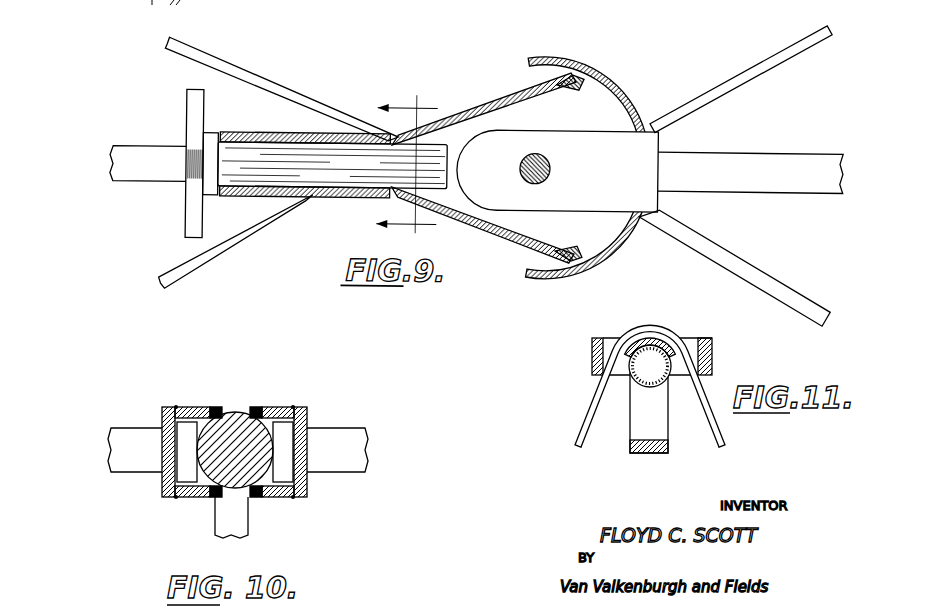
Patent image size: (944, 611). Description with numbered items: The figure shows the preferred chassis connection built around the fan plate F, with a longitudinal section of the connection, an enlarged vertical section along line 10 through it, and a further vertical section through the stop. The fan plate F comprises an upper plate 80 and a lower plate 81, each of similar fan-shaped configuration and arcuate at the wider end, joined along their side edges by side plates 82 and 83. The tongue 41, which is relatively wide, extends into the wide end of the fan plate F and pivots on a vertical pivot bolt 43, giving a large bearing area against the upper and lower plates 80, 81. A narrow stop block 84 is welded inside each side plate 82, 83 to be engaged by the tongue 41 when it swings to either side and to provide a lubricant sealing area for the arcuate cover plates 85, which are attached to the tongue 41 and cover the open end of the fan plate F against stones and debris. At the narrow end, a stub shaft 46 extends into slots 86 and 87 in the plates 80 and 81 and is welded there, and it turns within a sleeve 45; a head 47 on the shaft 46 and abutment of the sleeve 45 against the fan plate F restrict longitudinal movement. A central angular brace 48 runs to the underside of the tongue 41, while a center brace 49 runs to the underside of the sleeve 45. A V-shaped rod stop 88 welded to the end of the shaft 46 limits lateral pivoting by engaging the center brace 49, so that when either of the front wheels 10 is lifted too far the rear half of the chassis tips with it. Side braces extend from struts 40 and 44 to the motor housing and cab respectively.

In FIG. 9, the strut 40 is at (237, 81).
In FIG. 10, the strut 40 is at (120, 450).
In FIG. 11, the strut 40 is at (594, 339).
In FIG. 9, the tongue 41 is at (490, 132).
In FIG. 9, the pivot pin or bolt 43 is at (519, 167).
In FIG. 9, the strut 44 is at (722, 77).
In FIG. 9, the sleeve 45 is at (250, 127).
In FIG. 9, the stub shaft 46 is at (327, 175).
In FIG. 10, the stub shaft 46 is at (212, 432).
In FIG. 11, the stub shaft 46 is at (650, 368).
In FIG. 9, the head 47 is at (209, 195).
In FIG. 11, the head 47 is at (658, 328).
In FIG. 9, the central angular brace 48 is at (743, 184).
In FIG. 9, the center brace 49 is at (114, 164).
In FIG. 10, the center brace 49 is at (216, 519).
In FIG. 11, the center brace 49 is at (658, 452).
In FIG. 10, the upper plate 80 is at (268, 407).
In FIG. 9, the lower plate 81 is at (532, 227).
In FIG. 10, the lower plate 81 is at (270, 497).
In FIG. 9, the side plate 82 is at (505, 240).
In FIG. 10, the side plate 82 is at (162, 421).
In FIG. 9, the side plate 83 is at (506, 91).
In FIG. 10, the side plate 83 is at (307, 426).
In FIG. 9, the stop block 84 is at (576, 78).
In FIG. 9, the arcuate cover plate 85 is at (612, 77).
In FIG. 10, the slot 86 is at (233, 410).
In FIG. 10, the slot 87 is at (245, 500).
In FIG. 9, the stop 88 is at (188, 125).
In FIG. 11, the stop 88 is at (603, 404).
In FIG. 9, the front wheels 10 is at (389, 165).
In FIG. 9, the fan plate F is at (460, 106).
In FIG. 10, the fan plate F is at (305, 412).